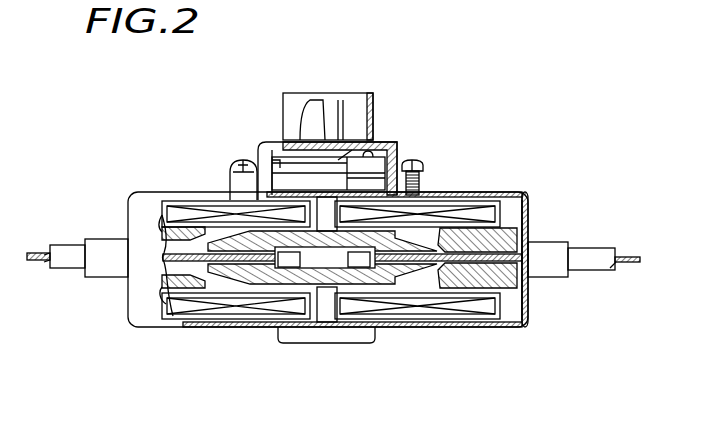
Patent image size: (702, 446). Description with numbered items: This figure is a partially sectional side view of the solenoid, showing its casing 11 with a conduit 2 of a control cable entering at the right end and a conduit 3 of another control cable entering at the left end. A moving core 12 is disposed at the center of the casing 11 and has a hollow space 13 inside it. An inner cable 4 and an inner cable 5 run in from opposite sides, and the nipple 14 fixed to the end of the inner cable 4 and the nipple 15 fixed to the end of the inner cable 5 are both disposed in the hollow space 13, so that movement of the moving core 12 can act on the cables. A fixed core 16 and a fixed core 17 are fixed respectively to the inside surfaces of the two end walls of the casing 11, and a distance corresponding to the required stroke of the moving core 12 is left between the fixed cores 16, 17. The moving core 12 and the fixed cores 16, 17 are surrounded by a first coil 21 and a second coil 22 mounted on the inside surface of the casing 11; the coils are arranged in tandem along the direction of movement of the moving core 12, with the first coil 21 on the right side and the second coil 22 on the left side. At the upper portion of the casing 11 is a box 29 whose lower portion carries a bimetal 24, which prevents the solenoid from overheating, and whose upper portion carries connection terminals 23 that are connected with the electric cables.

The conduit of control cable 2 is at (600, 250).
The conduit of control cable 3 is at (70, 245).
The inner cable 4 is at (622, 263).
The inner cable 5 is at (40, 265).
The casing 11 is at (506, 195).
The moving core 12 is at (385, 280).
The hollow space 13 is at (326, 268).
The nipple 14 is at (360, 267).
The nipple 15 is at (284, 262).
The fixed core 16 is at (528, 232).
The fixed core 17 is at (163, 240).
The first coil 21 is at (460, 215).
The second coil 22 is at (205, 215).
The connection terminals 23 is at (341, 93).
The bimetal 24 is at (367, 142).
The box 29 is at (400, 147).